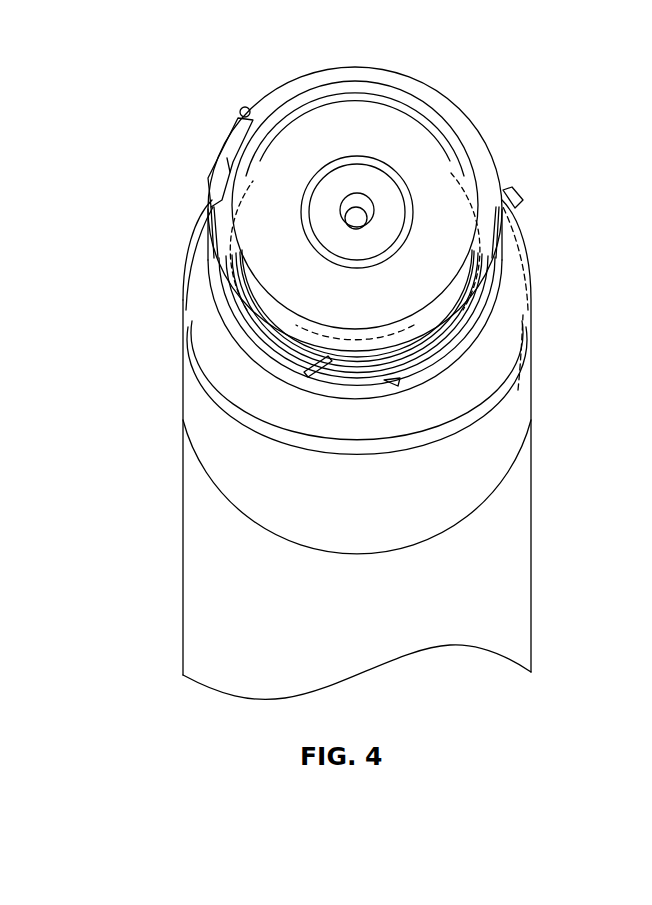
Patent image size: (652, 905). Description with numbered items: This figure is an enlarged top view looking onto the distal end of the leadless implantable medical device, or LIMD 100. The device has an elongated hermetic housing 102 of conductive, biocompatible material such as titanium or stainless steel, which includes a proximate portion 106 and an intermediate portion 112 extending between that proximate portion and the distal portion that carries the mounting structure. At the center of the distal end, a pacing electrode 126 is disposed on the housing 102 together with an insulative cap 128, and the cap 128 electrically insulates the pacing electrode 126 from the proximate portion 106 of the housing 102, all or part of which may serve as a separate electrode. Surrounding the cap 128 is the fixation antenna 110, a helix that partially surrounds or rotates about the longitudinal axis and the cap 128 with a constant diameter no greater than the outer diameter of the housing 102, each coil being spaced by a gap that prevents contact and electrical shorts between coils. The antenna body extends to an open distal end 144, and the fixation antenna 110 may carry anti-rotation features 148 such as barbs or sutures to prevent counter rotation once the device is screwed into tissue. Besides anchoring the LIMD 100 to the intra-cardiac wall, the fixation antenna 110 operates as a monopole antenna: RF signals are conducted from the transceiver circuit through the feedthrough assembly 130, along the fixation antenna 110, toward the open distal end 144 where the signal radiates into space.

The LIMD 100 is at (476, 104).
The hermetic housing 102 is at (538, 543).
The proximate portion 106 is at (200, 604).
The fixation antenna 110 is at (270, 93).
The intermediate portion 112 is at (186, 428).
The pacing electrode 126 is at (369, 178).
The insulative cap 128 is at (353, 120).
The feedthrough assembly 130 is at (515, 295).
The distal end 144 is at (222, 155).
The anti-rotation features 148 is at (507, 192).